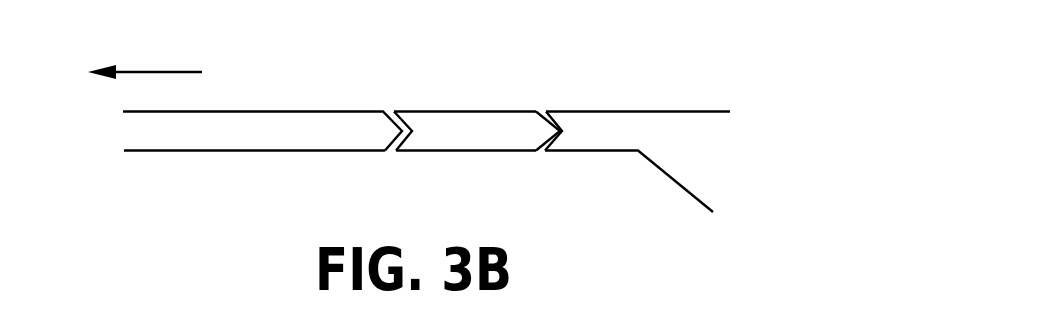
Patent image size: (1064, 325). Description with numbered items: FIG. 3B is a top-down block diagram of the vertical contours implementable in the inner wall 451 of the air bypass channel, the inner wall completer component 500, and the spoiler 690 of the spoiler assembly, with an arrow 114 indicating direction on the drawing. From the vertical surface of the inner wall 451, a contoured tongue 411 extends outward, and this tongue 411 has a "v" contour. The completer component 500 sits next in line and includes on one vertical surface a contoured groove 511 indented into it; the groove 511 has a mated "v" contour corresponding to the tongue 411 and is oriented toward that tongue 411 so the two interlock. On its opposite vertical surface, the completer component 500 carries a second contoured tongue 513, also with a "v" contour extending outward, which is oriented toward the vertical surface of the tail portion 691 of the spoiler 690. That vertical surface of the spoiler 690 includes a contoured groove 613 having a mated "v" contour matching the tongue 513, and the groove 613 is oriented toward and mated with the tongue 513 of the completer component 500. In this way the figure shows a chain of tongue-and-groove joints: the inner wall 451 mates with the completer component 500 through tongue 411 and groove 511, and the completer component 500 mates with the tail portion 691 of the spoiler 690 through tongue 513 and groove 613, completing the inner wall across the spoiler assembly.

The direction of travel 114 is at (170, 71).
The contoured tongue 411 is at (368, 132).
The inner wall 451 is at (257, 133).
The completer component 500 is at (483, 132).
The contoured groove 511 is at (417, 133).
The contoured tongue 513 is at (533, 132).
The contoured groove 613 is at (568, 118).
The tail portion 691 is at (630, 132).
The spoiler 690 is at (708, 138).